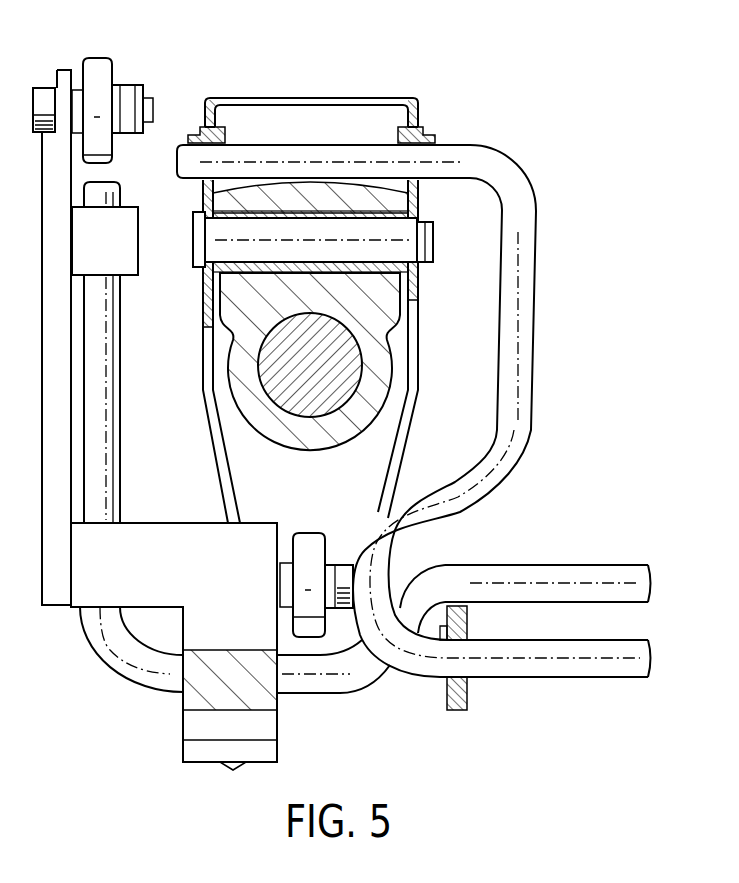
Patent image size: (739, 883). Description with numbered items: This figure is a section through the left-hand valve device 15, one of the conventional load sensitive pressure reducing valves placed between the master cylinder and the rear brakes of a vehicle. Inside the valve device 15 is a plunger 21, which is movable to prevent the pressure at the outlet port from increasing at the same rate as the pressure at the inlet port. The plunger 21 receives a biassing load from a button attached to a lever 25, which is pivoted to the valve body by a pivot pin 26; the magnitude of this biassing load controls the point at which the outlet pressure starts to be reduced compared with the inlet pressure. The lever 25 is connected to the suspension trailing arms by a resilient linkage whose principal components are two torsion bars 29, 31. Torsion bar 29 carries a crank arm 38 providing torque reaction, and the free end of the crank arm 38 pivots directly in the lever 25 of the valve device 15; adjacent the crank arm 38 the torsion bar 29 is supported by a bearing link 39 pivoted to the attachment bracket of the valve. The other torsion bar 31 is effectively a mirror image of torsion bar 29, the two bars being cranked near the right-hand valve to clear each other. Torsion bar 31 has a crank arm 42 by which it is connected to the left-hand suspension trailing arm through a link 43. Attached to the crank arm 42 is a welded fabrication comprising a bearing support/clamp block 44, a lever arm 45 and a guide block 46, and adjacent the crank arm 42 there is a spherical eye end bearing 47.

The valve device 15 is at (398, 348).
The plunger 21 is at (333, 398).
The lever 25 is at (213, 445).
The pivot pin 26 is at (433, 252).
The torsion bar 29 is at (593, 665).
The torsion bar 31 is at (565, 572).
The crank arm 38 is at (518, 341).
The bearing link 39 is at (447, 702).
The crank arm 42 is at (108, 350).
The link 43 is at (107, 67).
The bearing support/clamp block 44 is at (174, 646).
The lever arm 45 is at (53, 596).
The guide block 46 is at (105, 241).
The spherical eye end bearing 47 is at (315, 630).